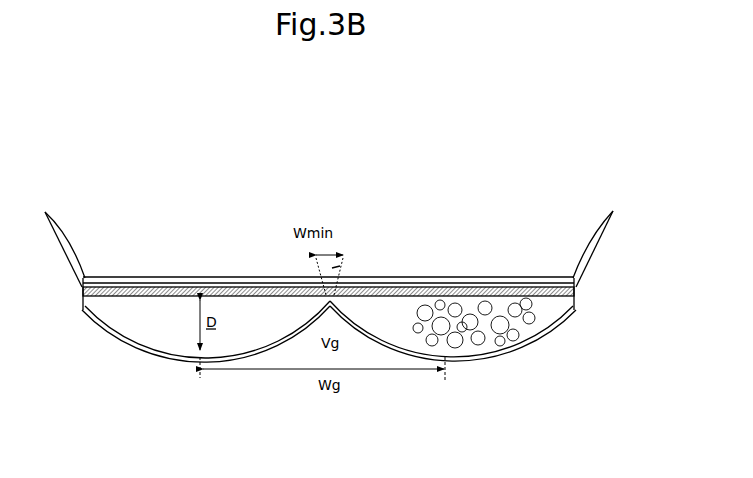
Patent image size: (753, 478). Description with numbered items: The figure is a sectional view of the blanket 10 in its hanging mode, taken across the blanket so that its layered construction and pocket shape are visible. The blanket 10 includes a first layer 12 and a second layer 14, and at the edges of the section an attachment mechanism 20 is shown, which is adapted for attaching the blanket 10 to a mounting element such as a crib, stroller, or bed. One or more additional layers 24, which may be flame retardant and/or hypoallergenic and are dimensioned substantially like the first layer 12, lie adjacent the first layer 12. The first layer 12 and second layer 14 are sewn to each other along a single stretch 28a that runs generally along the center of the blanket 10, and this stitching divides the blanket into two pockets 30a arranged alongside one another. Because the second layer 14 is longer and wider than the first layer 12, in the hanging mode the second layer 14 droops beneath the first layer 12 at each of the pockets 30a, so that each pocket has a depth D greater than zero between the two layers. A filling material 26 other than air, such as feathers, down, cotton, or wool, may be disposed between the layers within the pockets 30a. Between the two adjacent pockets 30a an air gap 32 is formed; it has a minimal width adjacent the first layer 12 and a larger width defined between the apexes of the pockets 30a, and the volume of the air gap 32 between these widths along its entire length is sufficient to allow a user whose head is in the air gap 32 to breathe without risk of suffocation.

The blanket 10 is at (546, 144).
The first layer 12 is at (495, 277).
The second layer 14 is at (505, 352).
The attachment mechanism 20 is at (54, 237).
The additional layer 24 is at (578, 292).
The filling material 26 is at (500, 318).
The single stretch 28a is at (340, 266).
The pockets 30a is at (162, 322).
The air gap 32 is at (288, 349).